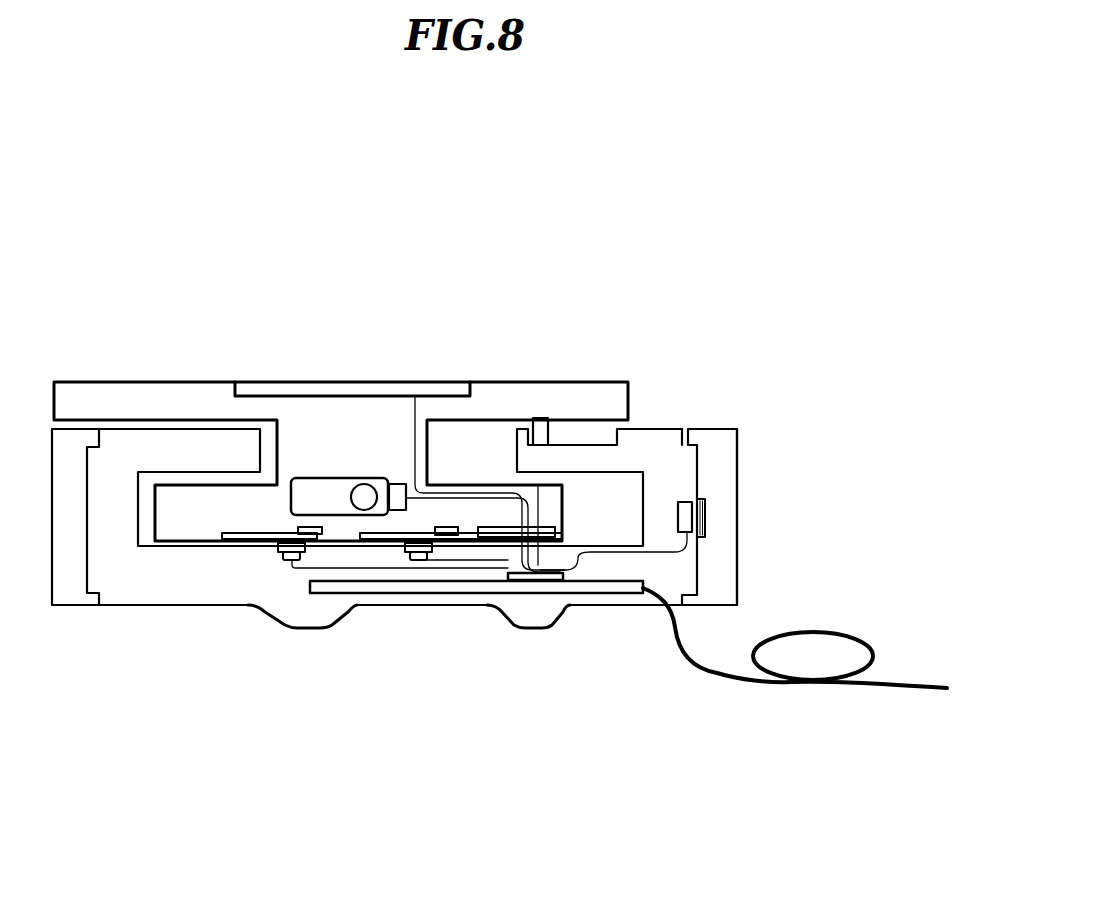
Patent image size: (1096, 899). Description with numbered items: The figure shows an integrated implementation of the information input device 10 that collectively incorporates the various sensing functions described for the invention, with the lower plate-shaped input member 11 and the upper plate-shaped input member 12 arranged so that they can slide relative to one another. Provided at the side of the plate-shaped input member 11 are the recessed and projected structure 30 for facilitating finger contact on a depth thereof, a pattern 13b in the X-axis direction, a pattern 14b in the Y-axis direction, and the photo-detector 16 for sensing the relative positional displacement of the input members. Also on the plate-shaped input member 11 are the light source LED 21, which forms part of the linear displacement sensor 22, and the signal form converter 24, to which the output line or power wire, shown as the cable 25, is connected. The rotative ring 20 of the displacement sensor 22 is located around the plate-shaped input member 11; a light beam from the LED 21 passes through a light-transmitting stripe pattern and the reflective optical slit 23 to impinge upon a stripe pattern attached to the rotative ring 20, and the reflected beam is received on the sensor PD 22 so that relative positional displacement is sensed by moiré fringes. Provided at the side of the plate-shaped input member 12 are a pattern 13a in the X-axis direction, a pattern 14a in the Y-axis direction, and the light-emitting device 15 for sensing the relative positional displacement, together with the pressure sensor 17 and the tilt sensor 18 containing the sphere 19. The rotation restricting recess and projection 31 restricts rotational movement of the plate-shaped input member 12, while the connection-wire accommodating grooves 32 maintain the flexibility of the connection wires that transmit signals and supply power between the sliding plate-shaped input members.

The motor unit 10 is at (712, 283).
The plate-shaped input member 11 is at (128, 605).
The plate-shaped input member 12 is at (70, 381).
The pattern in the X-axis direction 13a is at (298, 529).
The pattern in the X-axis direction 13b is at (283, 560).
The pattern in the Y-axis direction 14a is at (420, 528).
The pattern in the Y-axis direction 14b is at (408, 562).
The light-emitting device (LED) 15 is at (361, 409).
The photo-detector (PD) 16 is at (296, 618).
The pressure sensor 17 is at (270, 381).
The tilt sensor 18 is at (403, 482).
The sphere 19 is at (360, 493).
The rotative ring 20 is at (723, 440).
The light source LED 21 is at (692, 497).
The linear displacement sensor (sensor PD) 22 is at (685, 517).
The reflective optical slit 23 is at (706, 508).
The signal form converter 24 is at (600, 594).
The cable 25 is at (803, 632).
The contact recessed and projected structure 30 is at (353, 623).
The rotation restricting recess and projection 31 is at (548, 417).
The connection-wire accommodating grooves 32 is at (542, 522).